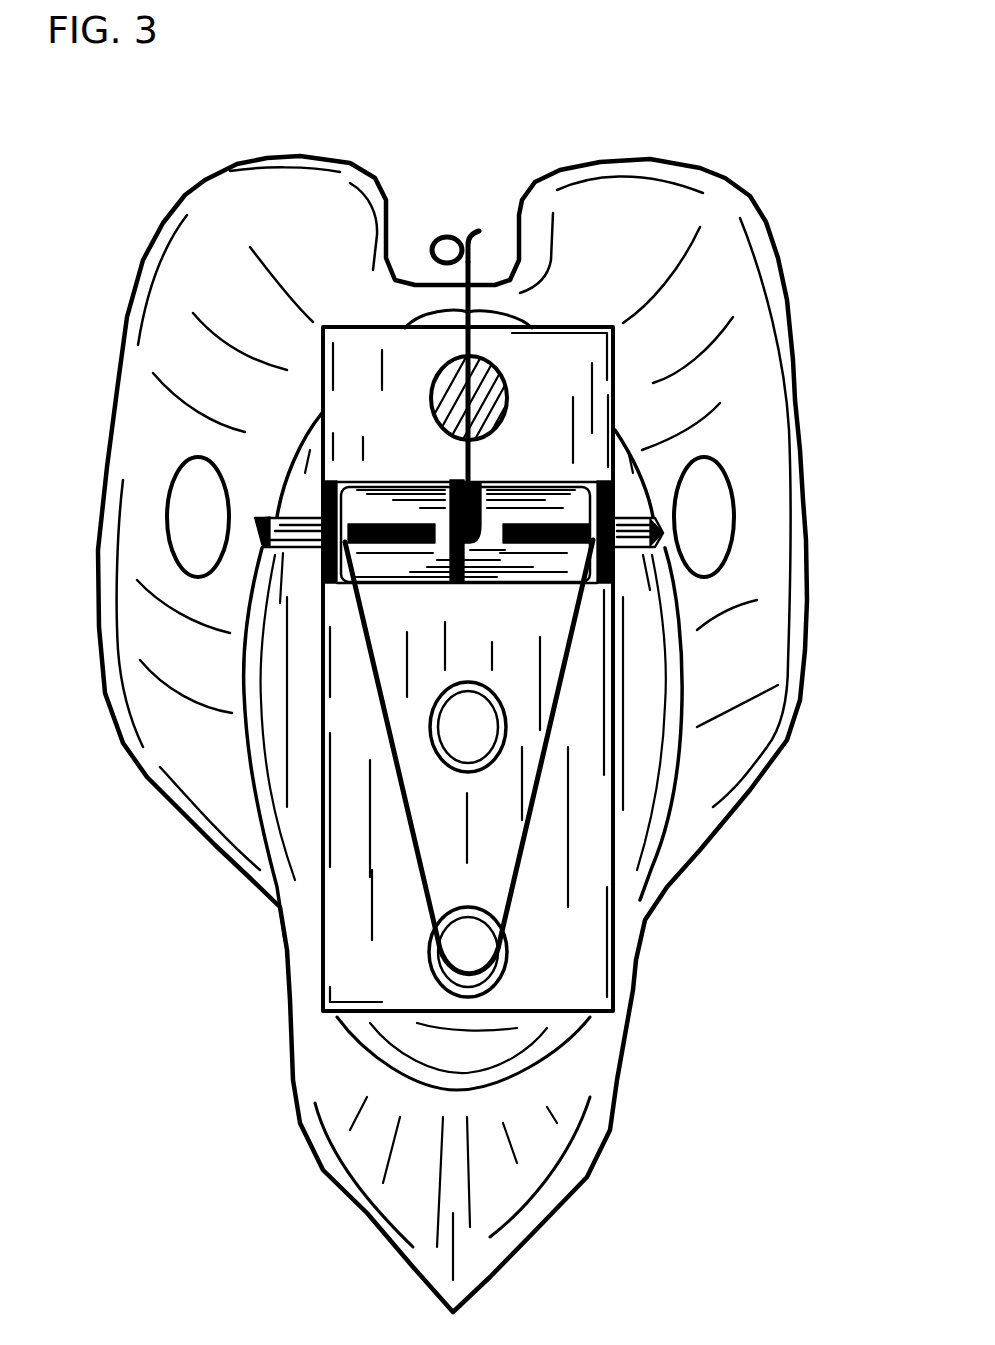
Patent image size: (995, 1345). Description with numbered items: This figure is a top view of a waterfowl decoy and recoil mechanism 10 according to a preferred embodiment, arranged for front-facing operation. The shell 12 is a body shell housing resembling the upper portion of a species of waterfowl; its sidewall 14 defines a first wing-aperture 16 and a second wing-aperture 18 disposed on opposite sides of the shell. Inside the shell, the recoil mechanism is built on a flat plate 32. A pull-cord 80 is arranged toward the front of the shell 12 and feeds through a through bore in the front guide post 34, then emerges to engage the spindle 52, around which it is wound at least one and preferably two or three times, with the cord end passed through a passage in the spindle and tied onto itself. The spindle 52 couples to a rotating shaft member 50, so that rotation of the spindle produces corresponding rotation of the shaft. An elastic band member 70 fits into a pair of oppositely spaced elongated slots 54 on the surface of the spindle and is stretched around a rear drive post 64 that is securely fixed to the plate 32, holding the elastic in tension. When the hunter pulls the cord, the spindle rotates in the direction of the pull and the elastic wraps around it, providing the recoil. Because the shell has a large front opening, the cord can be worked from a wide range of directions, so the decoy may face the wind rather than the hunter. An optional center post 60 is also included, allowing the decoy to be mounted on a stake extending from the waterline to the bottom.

The waterfowl decoy and recoil mechanism 10 is at (778, 105).
The shell 12 is at (186, 193).
The sidewall 14 is at (733, 378).
The first wing-aperture 16 is at (169, 512).
The second wing-aperture 18 is at (737, 520).
The flat plate 32 is at (562, 990).
The front guide post 34 is at (490, 373).
The rotating shaft member 50 is at (260, 530).
The spindle 52 is at (428, 560).
The elongated slots 54 is at (408, 527).
The center post 60 is at (483, 745).
The rear drive post 64 is at (481, 957).
The elastic band member 70 is at (507, 906).
The pull-cord 80 is at (456, 228).